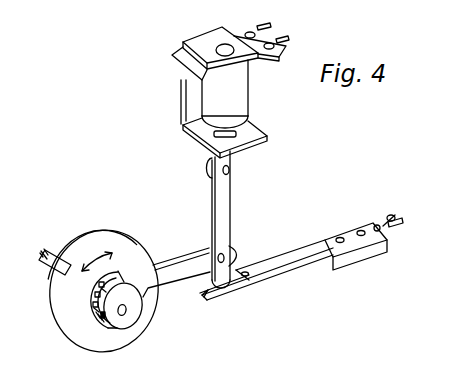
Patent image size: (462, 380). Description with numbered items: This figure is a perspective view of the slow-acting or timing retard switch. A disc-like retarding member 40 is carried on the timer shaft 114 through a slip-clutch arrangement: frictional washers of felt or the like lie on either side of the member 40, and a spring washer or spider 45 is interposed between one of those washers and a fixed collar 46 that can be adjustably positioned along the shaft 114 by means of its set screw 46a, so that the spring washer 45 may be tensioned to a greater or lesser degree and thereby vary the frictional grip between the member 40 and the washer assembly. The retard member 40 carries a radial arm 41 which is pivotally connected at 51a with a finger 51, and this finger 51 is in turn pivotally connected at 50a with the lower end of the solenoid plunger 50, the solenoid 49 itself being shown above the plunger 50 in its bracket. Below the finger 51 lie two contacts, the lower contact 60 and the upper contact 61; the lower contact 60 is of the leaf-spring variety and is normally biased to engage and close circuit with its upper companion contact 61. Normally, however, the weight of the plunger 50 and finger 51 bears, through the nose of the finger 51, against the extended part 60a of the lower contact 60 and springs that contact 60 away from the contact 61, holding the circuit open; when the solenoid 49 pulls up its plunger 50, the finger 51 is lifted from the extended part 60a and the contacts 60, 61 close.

The retarding member 40 is at (118, 230).
The radial arm 41 is at (170, 256).
The spring washer 45 is at (86, 305).
The fixed collar 46 is at (128, 330).
The set screw 46a is at (102, 317).
The solenoid 49 is at (252, 102).
The solenoid plunger 50 is at (233, 162).
The pivotal connection 50a is at (230, 171).
The finger 51 is at (217, 204).
The pivotal connection 51a is at (230, 248).
The lower contact 60 is at (305, 266).
The extended part 60a is at (199, 303).
The upper contact 61 is at (303, 256).
The timer shaft 114 is at (50, 272).